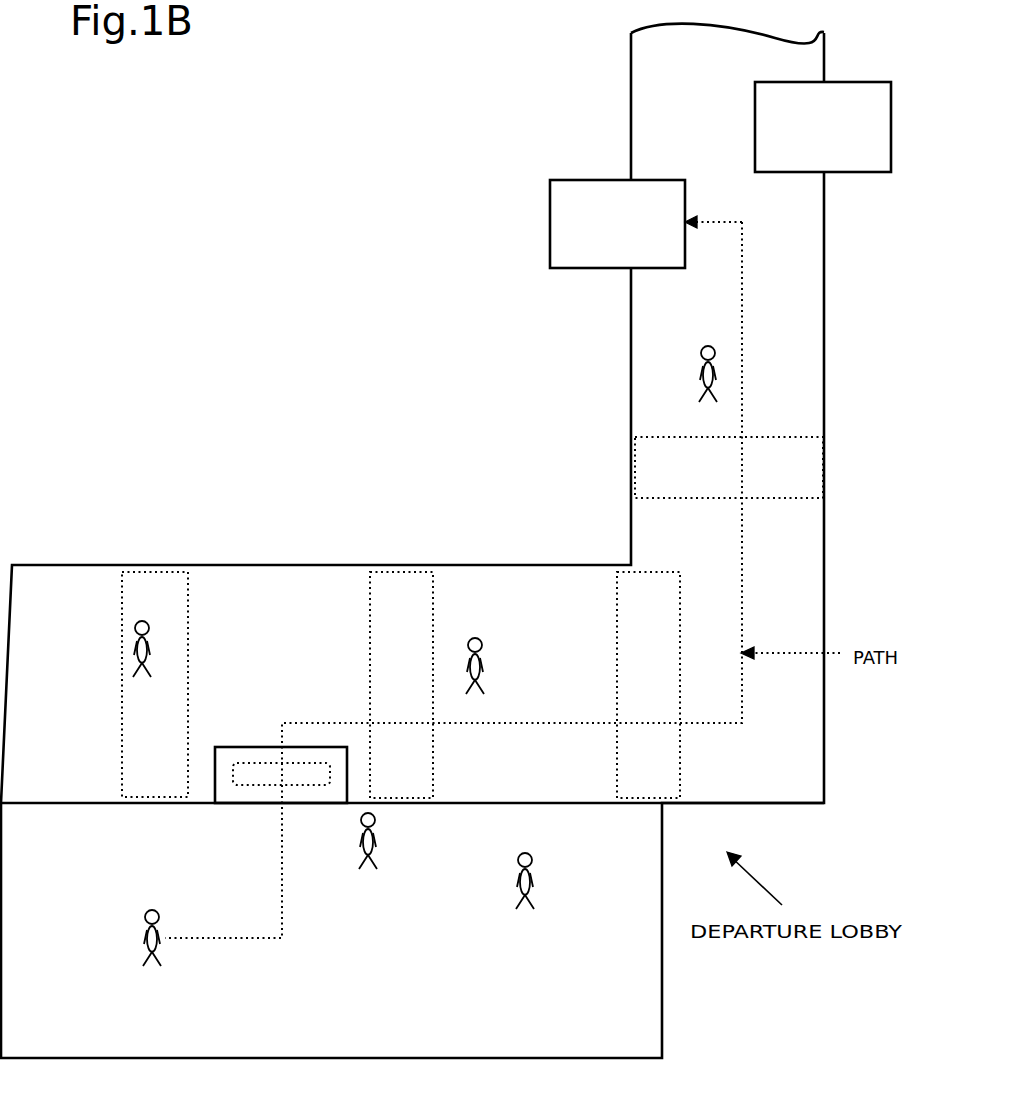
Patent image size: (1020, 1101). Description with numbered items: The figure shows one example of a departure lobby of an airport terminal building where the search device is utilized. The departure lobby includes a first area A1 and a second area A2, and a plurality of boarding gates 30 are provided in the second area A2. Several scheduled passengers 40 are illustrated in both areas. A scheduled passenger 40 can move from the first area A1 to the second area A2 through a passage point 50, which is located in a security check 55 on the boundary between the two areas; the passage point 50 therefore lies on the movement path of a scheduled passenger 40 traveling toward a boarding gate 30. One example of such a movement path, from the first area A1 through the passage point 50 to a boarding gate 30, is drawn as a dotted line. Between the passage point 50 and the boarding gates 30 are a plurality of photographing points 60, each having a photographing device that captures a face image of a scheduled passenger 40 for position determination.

The boarding gate 30 is at (855, 81).
The scheduled passenger 40 is at (701, 368).
The passage point 50 is at (306, 790).
The security check 55 is at (243, 808).
The photographing point 60 is at (768, 436).
The first area A1 is at (645, 1030).
The second area A2 is at (313, 565).